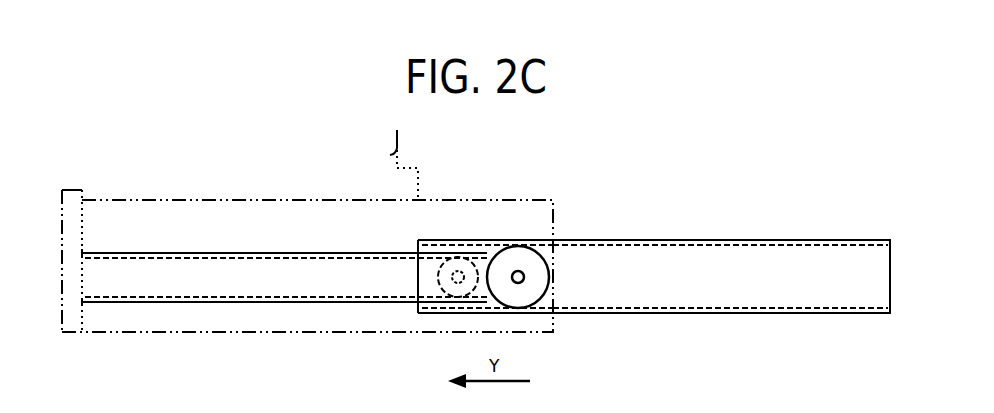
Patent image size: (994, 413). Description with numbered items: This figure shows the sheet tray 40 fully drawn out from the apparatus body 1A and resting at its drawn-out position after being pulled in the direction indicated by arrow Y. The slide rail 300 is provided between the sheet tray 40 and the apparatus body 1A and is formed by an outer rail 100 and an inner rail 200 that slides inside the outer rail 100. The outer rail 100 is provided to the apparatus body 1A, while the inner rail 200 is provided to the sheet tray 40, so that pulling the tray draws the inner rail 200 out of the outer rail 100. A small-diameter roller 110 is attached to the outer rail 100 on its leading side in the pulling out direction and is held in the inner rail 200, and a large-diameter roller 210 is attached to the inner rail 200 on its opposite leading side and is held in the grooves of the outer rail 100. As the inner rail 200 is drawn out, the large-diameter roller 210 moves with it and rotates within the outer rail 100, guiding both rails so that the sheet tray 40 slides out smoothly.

The sheet tray 40 is at (76, 190).
The inner rail 200 is at (242, 250).
The apparatus body 1A is at (387, 152).
The slide rail 300 is at (460, 238).
The outer rail 100 is at (713, 316).
The large-diameter roller 210 is at (437, 277).
The small-diameter roller 110 is at (550, 277).